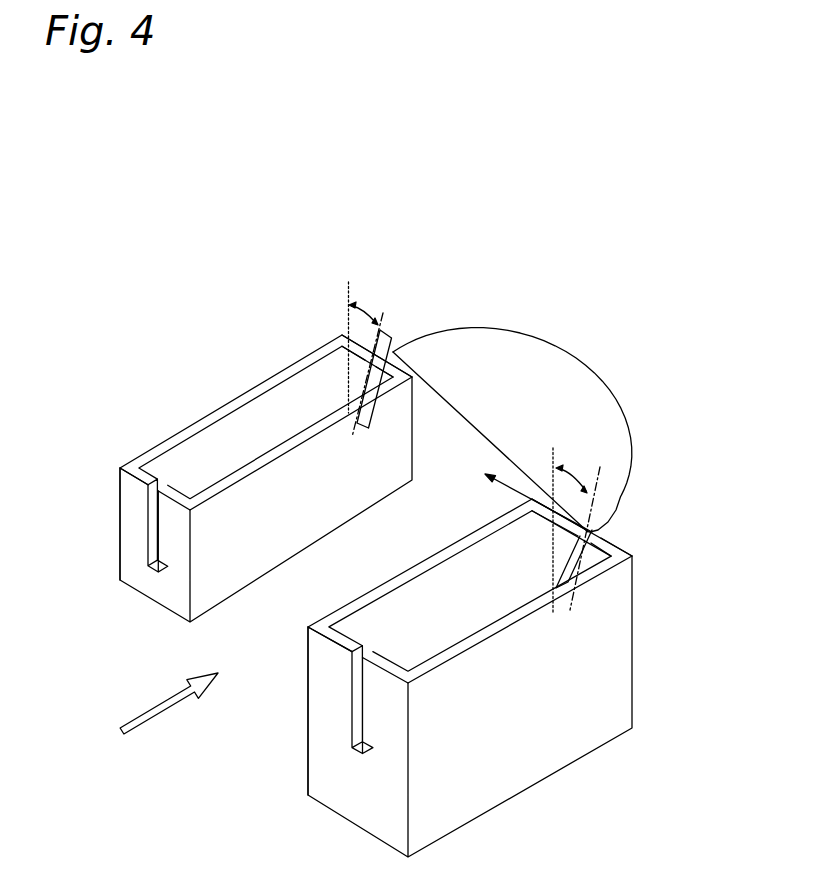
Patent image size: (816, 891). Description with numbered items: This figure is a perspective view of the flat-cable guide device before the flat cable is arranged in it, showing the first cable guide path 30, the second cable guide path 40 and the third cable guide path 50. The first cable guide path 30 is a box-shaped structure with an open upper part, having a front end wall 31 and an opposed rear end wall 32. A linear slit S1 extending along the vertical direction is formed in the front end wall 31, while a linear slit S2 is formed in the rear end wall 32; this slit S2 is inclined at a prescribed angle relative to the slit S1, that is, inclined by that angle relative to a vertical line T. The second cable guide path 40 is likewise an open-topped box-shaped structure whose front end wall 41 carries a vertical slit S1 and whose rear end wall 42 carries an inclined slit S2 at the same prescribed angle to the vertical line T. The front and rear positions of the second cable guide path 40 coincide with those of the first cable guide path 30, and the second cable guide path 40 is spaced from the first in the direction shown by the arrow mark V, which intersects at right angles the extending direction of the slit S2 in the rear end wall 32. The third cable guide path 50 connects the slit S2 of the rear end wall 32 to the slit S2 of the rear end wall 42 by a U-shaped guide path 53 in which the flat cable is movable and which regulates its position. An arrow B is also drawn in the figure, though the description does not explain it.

The first cable guide path 30 is at (513, 785).
The front end wall 31 is at (347, 680).
The rear end wall 32 is at (613, 547).
The second cable guide path 40 is at (233, 401).
The front end wall 41 is at (133, 493).
The rear end wall 42 is at (408, 345).
The third cable guide path 50 is at (547, 429).
The U-shaped guide path 53 is at (623, 417).
The slit S1 is at (155, 520).
The slit S2 is at (382, 360).
The vertical line T is at (347, 320).
The arrow mark V is at (532, 503).
The movement direction B is at (169, 703).